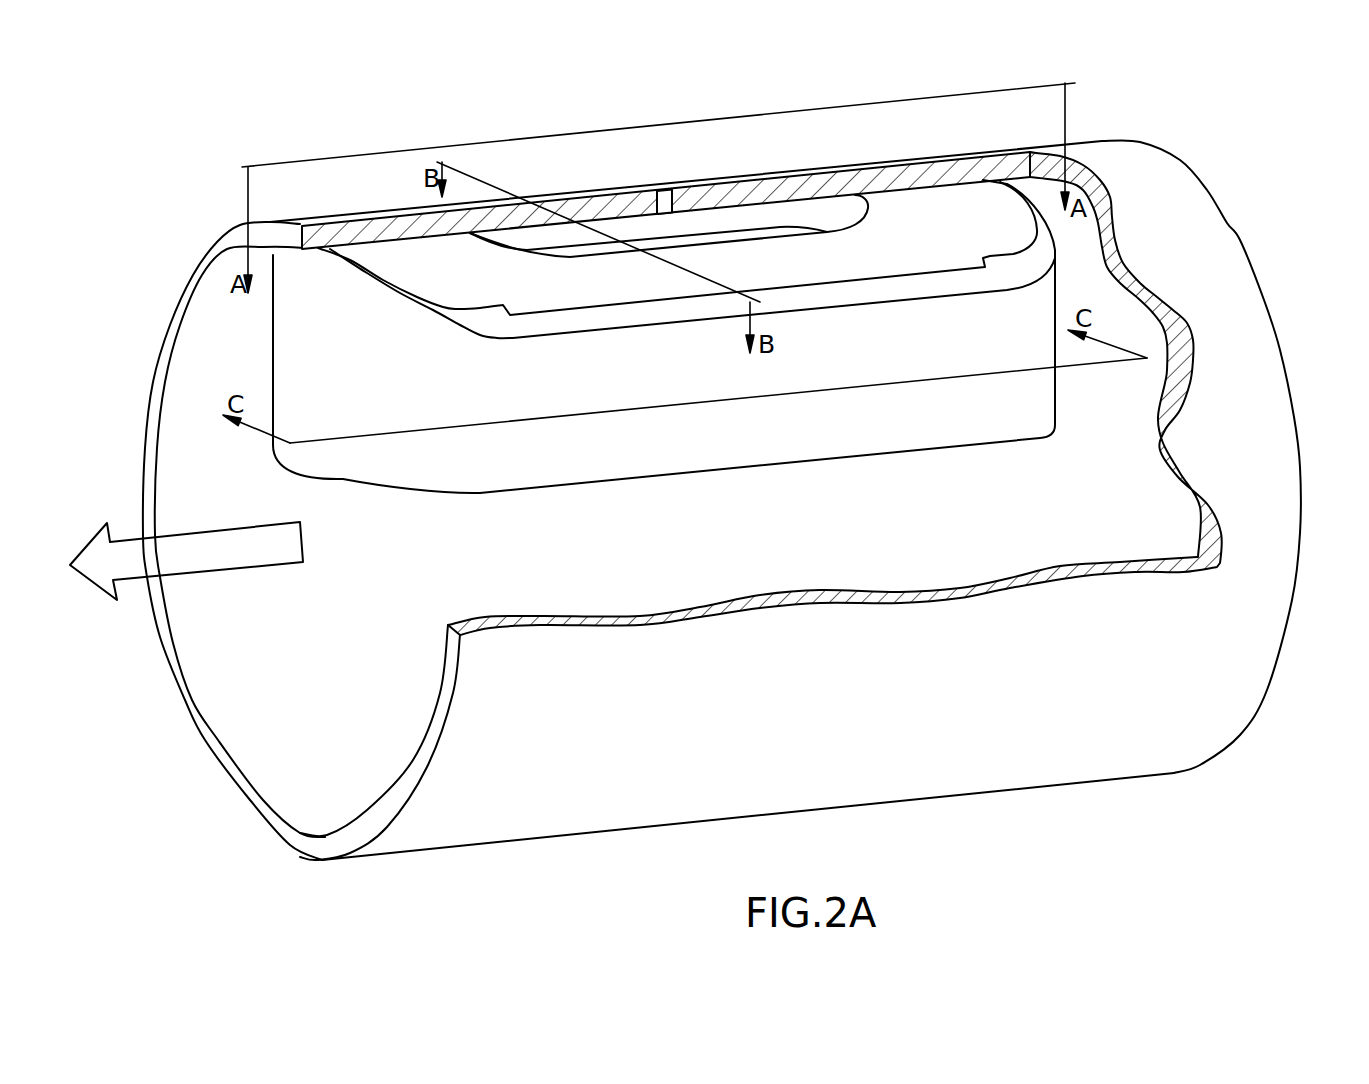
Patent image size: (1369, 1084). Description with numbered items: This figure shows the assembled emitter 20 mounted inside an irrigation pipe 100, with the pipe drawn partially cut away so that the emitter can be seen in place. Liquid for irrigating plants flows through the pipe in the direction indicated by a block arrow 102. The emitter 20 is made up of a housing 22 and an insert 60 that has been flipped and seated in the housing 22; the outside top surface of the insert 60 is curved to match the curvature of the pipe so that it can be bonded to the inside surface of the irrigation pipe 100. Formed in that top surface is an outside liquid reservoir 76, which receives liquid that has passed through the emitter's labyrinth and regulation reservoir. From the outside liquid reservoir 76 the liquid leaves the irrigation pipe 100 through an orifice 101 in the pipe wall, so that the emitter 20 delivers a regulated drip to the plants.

The irrigation pipe 100 is at (1180, 122).
The emitter 20 is at (1086, 397).
The housing 22 is at (765, 441).
The insert 60 is at (960, 244).
The outside liquid reservoir 76 is at (800, 212).
The orifice 101 is at (663, 186).
The block arrow 102 is at (240, 555).